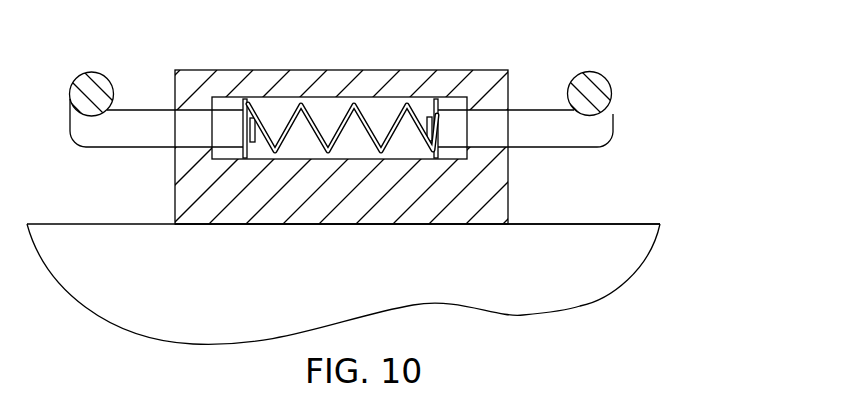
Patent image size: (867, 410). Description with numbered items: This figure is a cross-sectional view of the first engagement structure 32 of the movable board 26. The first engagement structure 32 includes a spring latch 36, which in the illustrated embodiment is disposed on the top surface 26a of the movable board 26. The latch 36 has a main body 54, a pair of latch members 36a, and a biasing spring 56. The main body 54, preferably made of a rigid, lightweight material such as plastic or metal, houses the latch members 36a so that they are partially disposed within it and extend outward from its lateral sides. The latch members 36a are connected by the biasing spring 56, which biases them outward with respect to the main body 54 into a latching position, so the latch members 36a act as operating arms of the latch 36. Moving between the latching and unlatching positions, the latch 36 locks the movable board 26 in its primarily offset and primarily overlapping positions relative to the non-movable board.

The movable board 26 is at (667, 253).
The top surface of the movable board 26a is at (567, 224).
The first engagement structure 32 is at (259, 244).
The latch 36 is at (499, 46).
The latch members 36a is at (95, 90).
The main body 54 is at (276, 70).
The biasing spring 56 is at (348, 120).